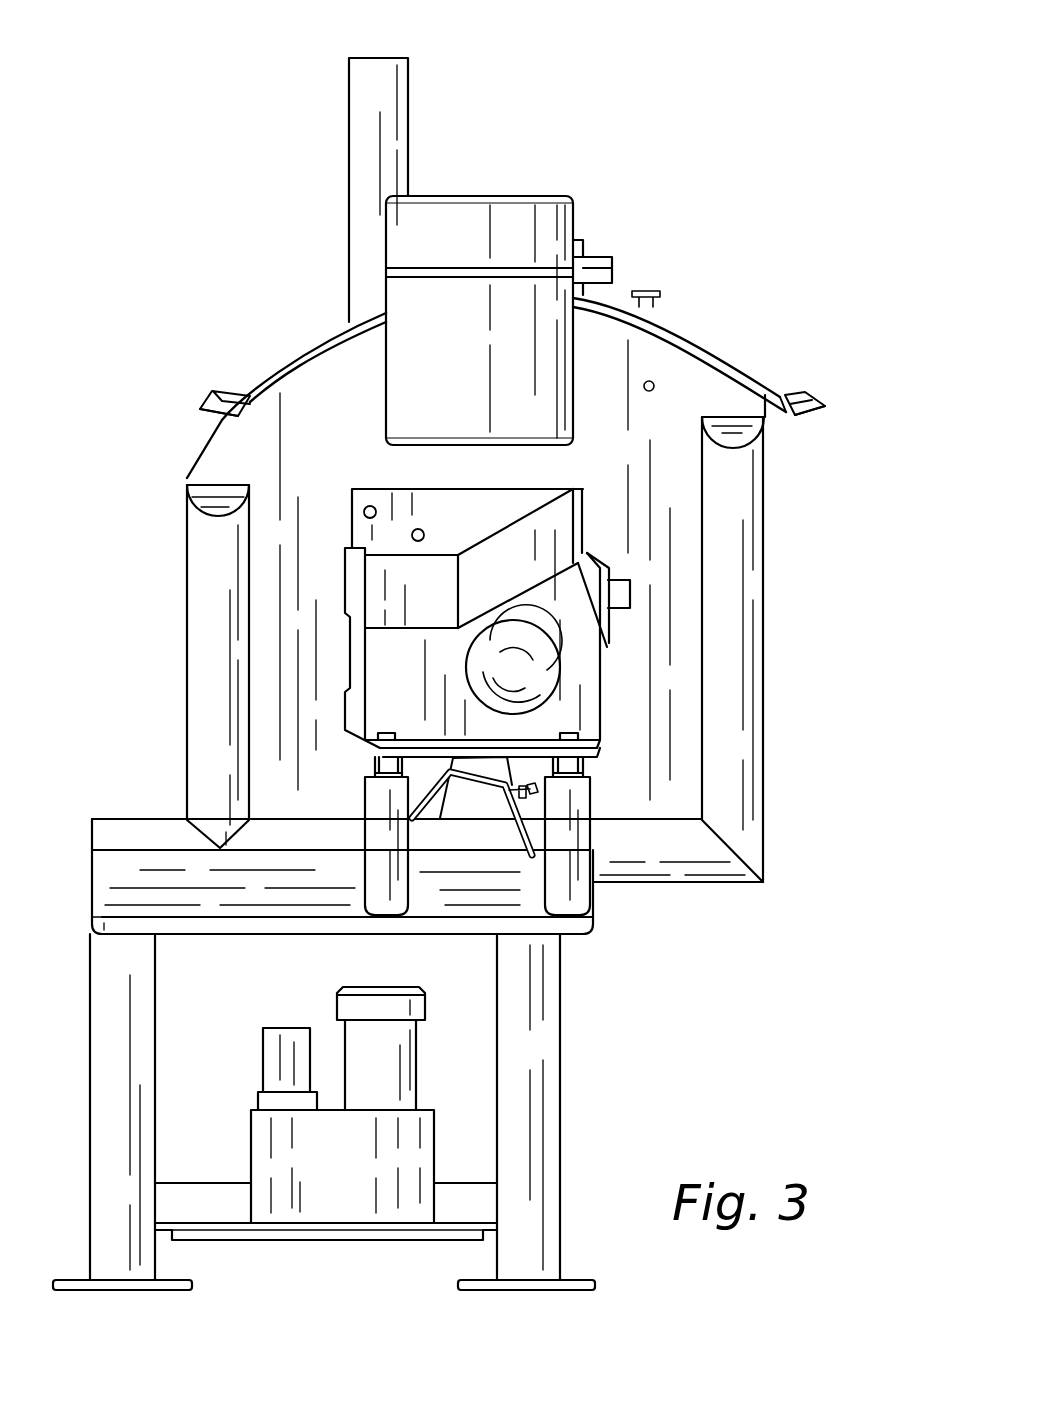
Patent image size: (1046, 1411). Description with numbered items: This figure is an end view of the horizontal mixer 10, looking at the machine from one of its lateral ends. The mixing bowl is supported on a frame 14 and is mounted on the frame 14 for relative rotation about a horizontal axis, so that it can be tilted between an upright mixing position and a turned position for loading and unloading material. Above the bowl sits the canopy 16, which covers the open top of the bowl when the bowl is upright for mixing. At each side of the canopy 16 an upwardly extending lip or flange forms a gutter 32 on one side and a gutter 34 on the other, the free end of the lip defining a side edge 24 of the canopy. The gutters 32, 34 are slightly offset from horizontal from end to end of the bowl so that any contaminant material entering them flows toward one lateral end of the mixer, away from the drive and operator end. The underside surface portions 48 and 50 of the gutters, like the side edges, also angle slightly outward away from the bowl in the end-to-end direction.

The horizontal mixer 10 is at (150, 186).
The frame 14 is at (678, 877).
The canopy 16 is at (682, 326).
The side edge 24 is at (824, 402).
The gutter 32 is at (785, 388).
The gutter 34 is at (245, 388).
The underside surface portion 48 is at (806, 408).
The underside surface portion 50 is at (224, 404).